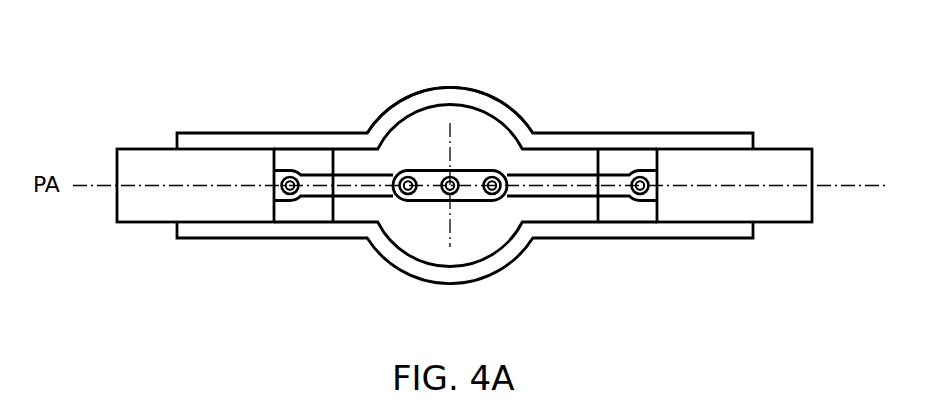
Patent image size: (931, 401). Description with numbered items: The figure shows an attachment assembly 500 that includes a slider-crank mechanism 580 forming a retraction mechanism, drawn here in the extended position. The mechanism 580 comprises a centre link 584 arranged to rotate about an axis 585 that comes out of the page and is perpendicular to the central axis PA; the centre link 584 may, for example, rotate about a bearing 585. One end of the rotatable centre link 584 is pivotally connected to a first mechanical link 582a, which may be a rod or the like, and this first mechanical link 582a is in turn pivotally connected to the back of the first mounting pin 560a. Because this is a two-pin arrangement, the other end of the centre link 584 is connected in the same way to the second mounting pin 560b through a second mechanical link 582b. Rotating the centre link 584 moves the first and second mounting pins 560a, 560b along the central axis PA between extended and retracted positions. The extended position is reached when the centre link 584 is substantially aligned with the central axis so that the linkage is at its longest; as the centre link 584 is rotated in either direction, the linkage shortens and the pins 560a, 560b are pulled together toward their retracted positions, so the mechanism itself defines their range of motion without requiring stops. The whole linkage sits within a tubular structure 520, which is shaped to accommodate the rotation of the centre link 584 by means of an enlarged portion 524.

The attachment assembly 500 is at (469, 171).
The tubular structure 520 is at (465, 148).
The enlarged portion 524 is at (455, 92).
The first mounting pin 560a is at (783, 177).
The second mounting pin 560b is at (157, 163).
The slider-crank mechanism 580 is at (465, 191).
The first mechanical link 582a is at (565, 178).
The second mechanical link 582b is at (358, 176).
The centre link 584 is at (432, 198).
The axis 585 is at (452, 189).